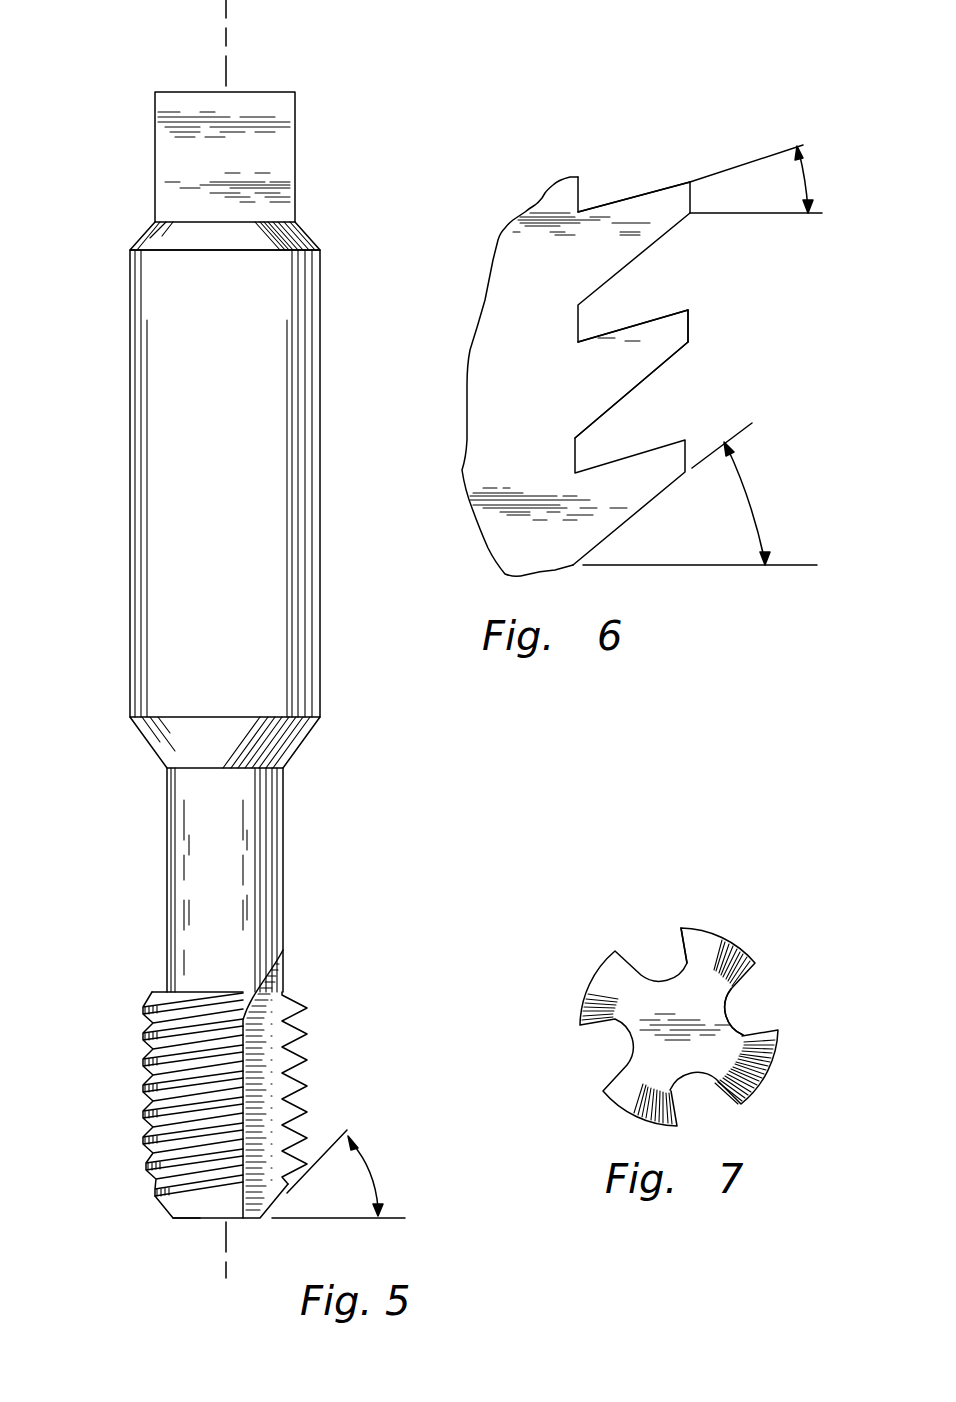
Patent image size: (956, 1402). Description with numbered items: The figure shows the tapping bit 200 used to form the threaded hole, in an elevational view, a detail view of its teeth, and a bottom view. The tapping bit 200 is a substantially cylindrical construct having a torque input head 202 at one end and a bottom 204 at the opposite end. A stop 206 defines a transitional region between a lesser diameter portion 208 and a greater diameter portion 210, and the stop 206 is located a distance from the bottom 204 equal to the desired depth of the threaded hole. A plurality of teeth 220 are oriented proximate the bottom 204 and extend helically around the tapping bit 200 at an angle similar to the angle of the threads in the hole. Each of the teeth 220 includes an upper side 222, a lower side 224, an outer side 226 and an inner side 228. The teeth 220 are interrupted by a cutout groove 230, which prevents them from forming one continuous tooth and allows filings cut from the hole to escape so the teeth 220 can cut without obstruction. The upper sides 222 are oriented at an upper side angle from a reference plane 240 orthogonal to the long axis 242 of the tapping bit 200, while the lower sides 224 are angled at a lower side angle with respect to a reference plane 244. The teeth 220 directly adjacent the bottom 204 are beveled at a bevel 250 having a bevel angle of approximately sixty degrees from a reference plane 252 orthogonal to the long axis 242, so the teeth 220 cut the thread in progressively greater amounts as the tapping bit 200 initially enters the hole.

In FIG. 5, the tapping bit 200 is at (342, 282).
In FIG. 5, the torque input head 202 is at (297, 156).
In FIG. 5, the bottom 204 is at (190, 1220).
In FIG. 5, the stop 206 is at (300, 746).
In FIG. 5, the lesser diameter portion 208 is at (283, 830).
In FIG. 5, the greater diameter portion 210 is at (320, 640).
In FIG. 5, the teeth 220 is at (150, 1005).
In FIG. 6, the teeth 220 is at (613, 270).
In FIG. 7, the teeth 220 is at (713, 932).
In FIG. 6, the upper side 222 is at (633, 323).
In FIG. 6, the lower side 224 is at (635, 388).
In FIG. 7, the lower side 224 is at (697, 948).
In FIG. 6, the outer side 226 is at (688, 328).
In FIG. 6, the inner side 228 is at (578, 323).
In FIG. 5, the cutout groove 230 is at (283, 975).
In FIG. 7, the cutout groove 230 is at (730, 1013).
In FIG. 6, the reference plane 240 is at (783, 213).
In FIG. 5, the long axis 242 is at (226, 66).
In FIG. 6, the reference plane 244 is at (783, 566).
In FIG. 5, the bevel 250 is at (168, 1207).
In FIG. 5, the reference plane 252 is at (400, 1218).